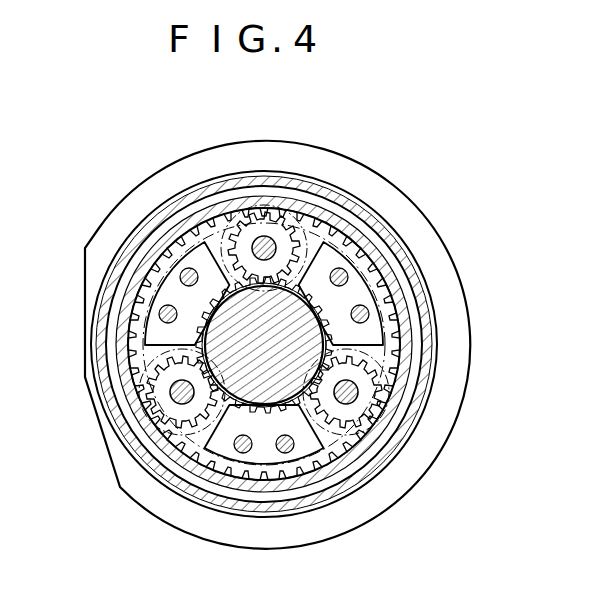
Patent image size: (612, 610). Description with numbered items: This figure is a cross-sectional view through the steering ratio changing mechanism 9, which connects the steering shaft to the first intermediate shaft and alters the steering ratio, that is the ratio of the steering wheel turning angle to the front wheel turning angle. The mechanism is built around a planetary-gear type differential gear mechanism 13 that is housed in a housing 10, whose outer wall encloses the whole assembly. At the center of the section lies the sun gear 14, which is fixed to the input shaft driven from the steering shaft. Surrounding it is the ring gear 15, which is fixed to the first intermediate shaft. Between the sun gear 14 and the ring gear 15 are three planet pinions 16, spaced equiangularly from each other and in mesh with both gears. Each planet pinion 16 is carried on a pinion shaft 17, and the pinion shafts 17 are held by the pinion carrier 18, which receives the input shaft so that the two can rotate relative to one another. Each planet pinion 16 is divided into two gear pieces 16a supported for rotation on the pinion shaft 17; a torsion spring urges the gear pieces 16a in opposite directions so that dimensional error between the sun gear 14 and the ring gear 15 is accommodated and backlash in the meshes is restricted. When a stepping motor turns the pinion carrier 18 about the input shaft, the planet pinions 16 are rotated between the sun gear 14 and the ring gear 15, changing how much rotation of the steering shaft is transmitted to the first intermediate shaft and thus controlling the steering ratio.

The steering ratio changing mechanism 9 is at (155, 150).
The housing 10 is at (137, 222).
The differential gear mechanism 13 is at (349, 468).
The sun gear 14 is at (370, 293).
The ring gear 15 is at (397, 412).
The planet pinion 16 is at (302, 219).
The gear piece 16a is at (289, 216).
The pinion shaft 17 is at (258, 237).
The pinion carrier 18 is at (318, 261).